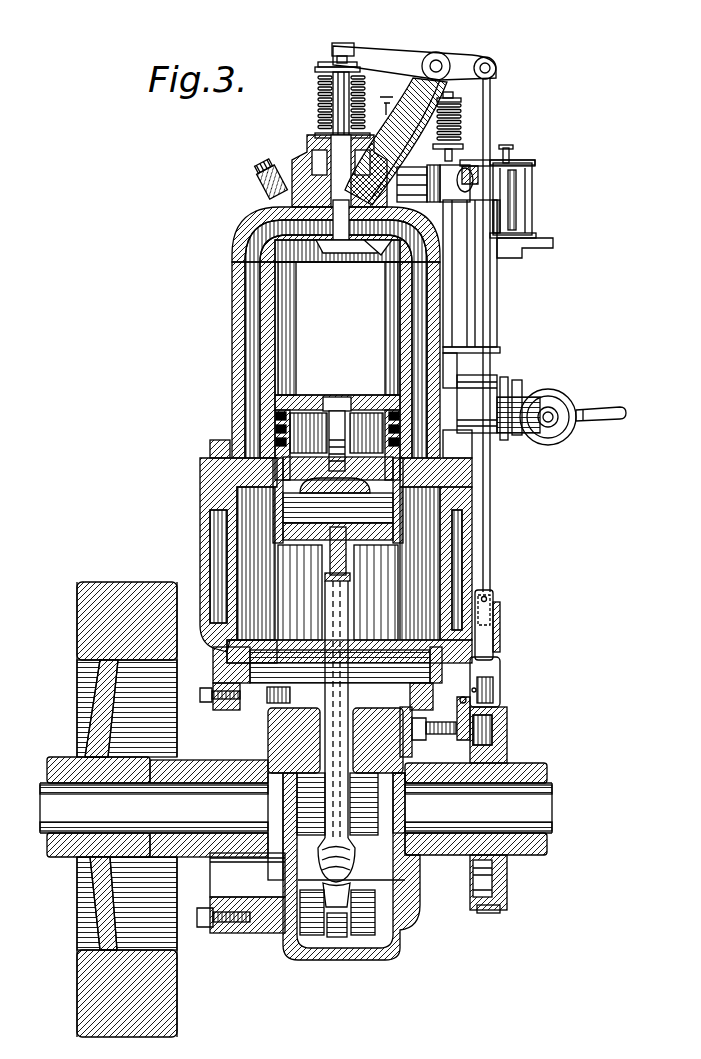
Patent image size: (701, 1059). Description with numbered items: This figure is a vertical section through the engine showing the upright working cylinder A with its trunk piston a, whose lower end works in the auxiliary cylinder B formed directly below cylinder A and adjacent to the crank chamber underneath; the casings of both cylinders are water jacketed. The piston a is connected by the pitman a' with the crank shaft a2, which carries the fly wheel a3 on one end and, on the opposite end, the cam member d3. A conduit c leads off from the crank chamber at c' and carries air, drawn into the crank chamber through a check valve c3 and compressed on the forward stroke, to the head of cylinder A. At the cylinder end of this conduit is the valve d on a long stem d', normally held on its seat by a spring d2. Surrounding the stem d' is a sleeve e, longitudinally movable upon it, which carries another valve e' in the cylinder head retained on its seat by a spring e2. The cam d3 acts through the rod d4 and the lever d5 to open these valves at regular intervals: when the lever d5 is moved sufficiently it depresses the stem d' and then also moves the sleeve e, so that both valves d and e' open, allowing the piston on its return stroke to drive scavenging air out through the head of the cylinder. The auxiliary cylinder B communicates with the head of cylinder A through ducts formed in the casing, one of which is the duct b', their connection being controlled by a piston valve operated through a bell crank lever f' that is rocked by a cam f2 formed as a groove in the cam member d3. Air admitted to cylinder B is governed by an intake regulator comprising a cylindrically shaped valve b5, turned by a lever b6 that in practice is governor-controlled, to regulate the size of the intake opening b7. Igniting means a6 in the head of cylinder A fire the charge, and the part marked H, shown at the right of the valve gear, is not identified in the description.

The trunk piston a is at (326, 360).
The pitman a' is at (228, 651).
The crank shaft a2 is at (556, 805).
The fly wheel a3 is at (77, 610).
The igniting means a6 is at (260, 182).
The working cylinder A is at (337, 328).
The duct b' is at (367, 273).
The cylindrically shaped valve b5 is at (553, 393).
The lever b6 is at (616, 400).
The intake opening b7 is at (510, 402).
The auxiliary cylinder B is at (268, 519).
The conduit c is at (345, 732).
The conduit outlet c' is at (211, 680).
The check valve c3 is at (371, 821).
The valve d is at (308, 235).
The long stem d' is at (279, 222).
The spring d2 is at (352, 77).
The cam d3 is at (485, 708).
The rod d4 is at (491, 515).
The lever d5 is at (409, 58).
The sleeve e is at (316, 136).
The valve e' is at (316, 166).
The spring e2 is at (354, 99).
The bell crank lever f' is at (506, 679).
The cam f2 is at (492, 731).
The governor H is at (528, 198).